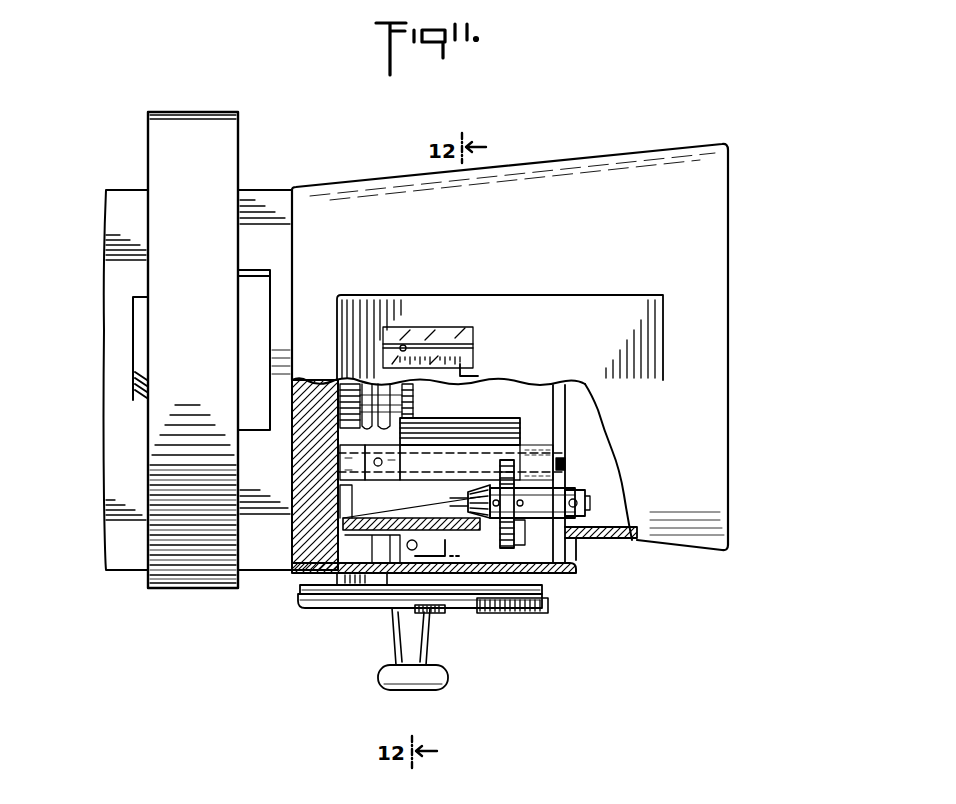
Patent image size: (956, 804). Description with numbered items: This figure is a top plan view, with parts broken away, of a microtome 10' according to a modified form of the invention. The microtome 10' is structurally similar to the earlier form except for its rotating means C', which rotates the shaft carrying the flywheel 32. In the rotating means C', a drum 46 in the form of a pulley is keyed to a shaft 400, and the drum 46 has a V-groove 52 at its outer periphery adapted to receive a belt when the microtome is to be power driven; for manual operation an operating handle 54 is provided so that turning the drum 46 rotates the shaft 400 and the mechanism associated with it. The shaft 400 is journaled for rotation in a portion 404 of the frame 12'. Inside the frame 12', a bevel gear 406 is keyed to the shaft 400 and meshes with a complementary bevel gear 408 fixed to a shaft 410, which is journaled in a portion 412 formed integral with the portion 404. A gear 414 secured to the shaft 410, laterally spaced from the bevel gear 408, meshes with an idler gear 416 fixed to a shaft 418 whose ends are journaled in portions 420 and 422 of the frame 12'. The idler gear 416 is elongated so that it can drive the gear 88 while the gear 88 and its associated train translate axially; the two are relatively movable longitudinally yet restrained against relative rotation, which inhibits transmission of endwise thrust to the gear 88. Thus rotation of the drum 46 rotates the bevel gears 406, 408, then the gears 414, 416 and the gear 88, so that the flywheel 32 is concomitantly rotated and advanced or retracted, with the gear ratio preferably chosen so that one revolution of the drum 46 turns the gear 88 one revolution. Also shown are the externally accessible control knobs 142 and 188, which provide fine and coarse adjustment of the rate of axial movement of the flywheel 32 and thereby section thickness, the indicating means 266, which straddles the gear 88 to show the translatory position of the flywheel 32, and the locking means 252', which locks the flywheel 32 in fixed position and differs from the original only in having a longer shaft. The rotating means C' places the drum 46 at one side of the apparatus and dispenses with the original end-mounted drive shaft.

The microtome 10' is at (302, 649).
The frame 12' is at (641, 559).
The flywheel 32 is at (168, 584).
The drum 46 is at (318, 610).
The V-groove 52 is at (300, 590).
The operating handle 54 is at (384, 677).
The gear 88 is at (420, 404).
The control knob 142 is at (528, 614).
The control knob 188 is at (443, 614).
The locking means 252' is at (362, 604).
The indicating means 266 is at (441, 318).
The shaft 400 is at (395, 616).
The frame portion 404 is at (562, 570).
The bevel gear 406 is at (380, 518).
The bevel gear 408 is at (490, 518).
The shaft 410 is at (580, 504).
The frame portion 412 is at (550, 492).
The gear 414 is at (517, 546).
The idler gear 416 is at (470, 428).
The shaft 418 is at (568, 464).
The frame portion 420 is at (300, 470).
The frame portion 422 is at (548, 455).
The rotating means C' is at (602, 581).